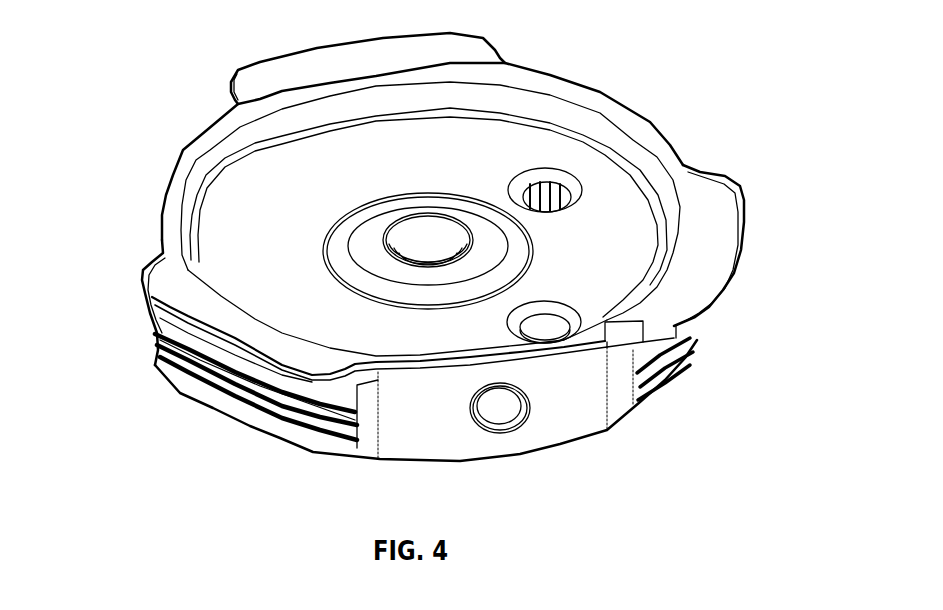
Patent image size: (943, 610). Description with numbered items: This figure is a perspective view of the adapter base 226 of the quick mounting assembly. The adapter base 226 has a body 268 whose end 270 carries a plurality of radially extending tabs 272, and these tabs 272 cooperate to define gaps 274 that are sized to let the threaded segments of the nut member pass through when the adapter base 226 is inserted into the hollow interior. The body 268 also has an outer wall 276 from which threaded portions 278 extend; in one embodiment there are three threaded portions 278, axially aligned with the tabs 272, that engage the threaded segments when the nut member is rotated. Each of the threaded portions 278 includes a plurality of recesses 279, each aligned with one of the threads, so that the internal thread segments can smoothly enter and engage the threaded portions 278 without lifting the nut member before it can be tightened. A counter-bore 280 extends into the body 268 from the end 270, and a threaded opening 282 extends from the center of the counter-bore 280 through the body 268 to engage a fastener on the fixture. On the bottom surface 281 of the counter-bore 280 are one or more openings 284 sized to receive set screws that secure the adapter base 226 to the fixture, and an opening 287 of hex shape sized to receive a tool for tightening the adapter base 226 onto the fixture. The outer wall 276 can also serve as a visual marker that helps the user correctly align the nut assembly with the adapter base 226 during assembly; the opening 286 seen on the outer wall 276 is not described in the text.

The adapter base 226 is at (727, 105).
The body 268 is at (575, 437).
The end 270 is at (615, 104).
The radially extending tabs 272 is at (258, 66).
The gaps 274 is at (563, 66).
The outer wall 276 is at (443, 437).
The threaded portions 278 is at (170, 360).
The recesses 279 is at (313, 458).
The counter-bore 280 is at (481, 104).
The bottom surface 281 is at (282, 252).
The threaded opening 282 is at (436, 226).
The openings 284 is at (549, 326).
The side aperture 286 is at (503, 407).
The opening 287 is at (536, 196).